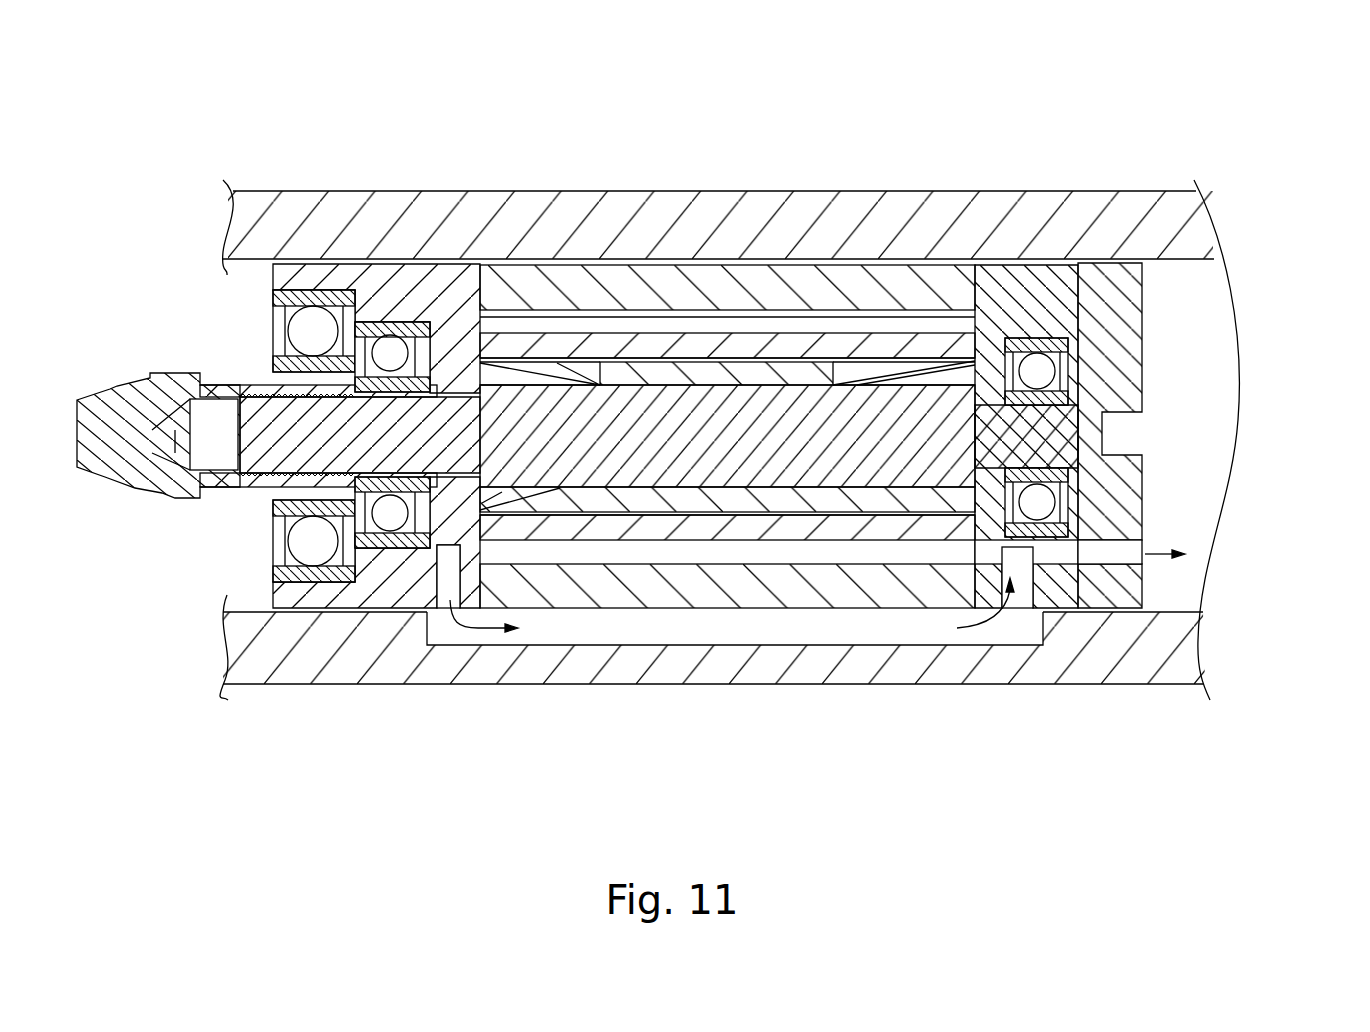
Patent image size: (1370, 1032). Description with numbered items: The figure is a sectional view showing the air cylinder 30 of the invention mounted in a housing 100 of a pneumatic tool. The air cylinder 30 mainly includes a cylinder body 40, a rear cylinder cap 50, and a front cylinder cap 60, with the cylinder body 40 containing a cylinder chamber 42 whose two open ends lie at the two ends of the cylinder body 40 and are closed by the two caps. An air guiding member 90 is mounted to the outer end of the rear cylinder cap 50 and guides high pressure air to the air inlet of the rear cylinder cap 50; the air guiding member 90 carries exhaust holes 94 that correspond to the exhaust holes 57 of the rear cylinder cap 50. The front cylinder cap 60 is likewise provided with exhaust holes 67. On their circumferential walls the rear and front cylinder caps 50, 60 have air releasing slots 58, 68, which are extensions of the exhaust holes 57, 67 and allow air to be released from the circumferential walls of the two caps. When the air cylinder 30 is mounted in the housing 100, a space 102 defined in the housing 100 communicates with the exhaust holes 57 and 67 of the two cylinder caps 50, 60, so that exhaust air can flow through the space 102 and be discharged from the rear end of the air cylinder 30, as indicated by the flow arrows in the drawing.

The air cylinder 30 is at (675, 283).
The cylinder body 40 is at (827, 287).
The cylinder chamber 42 is at (840, 553).
The rear cylinder cap 50 is at (1040, 297).
The exhaust holes 57 is at (1053, 552).
The air releasing slot 58 is at (1020, 573).
The front cylinder cap 60 is at (410, 292).
The exhaust holes 67 is at (470, 550).
The air releasing slot 68 is at (445, 575).
The air guiding member 90 is at (1142, 319).
The exhaust holes 94 is at (1112, 555).
The housing 100 is at (758, 670).
The space 102 is at (662, 632).